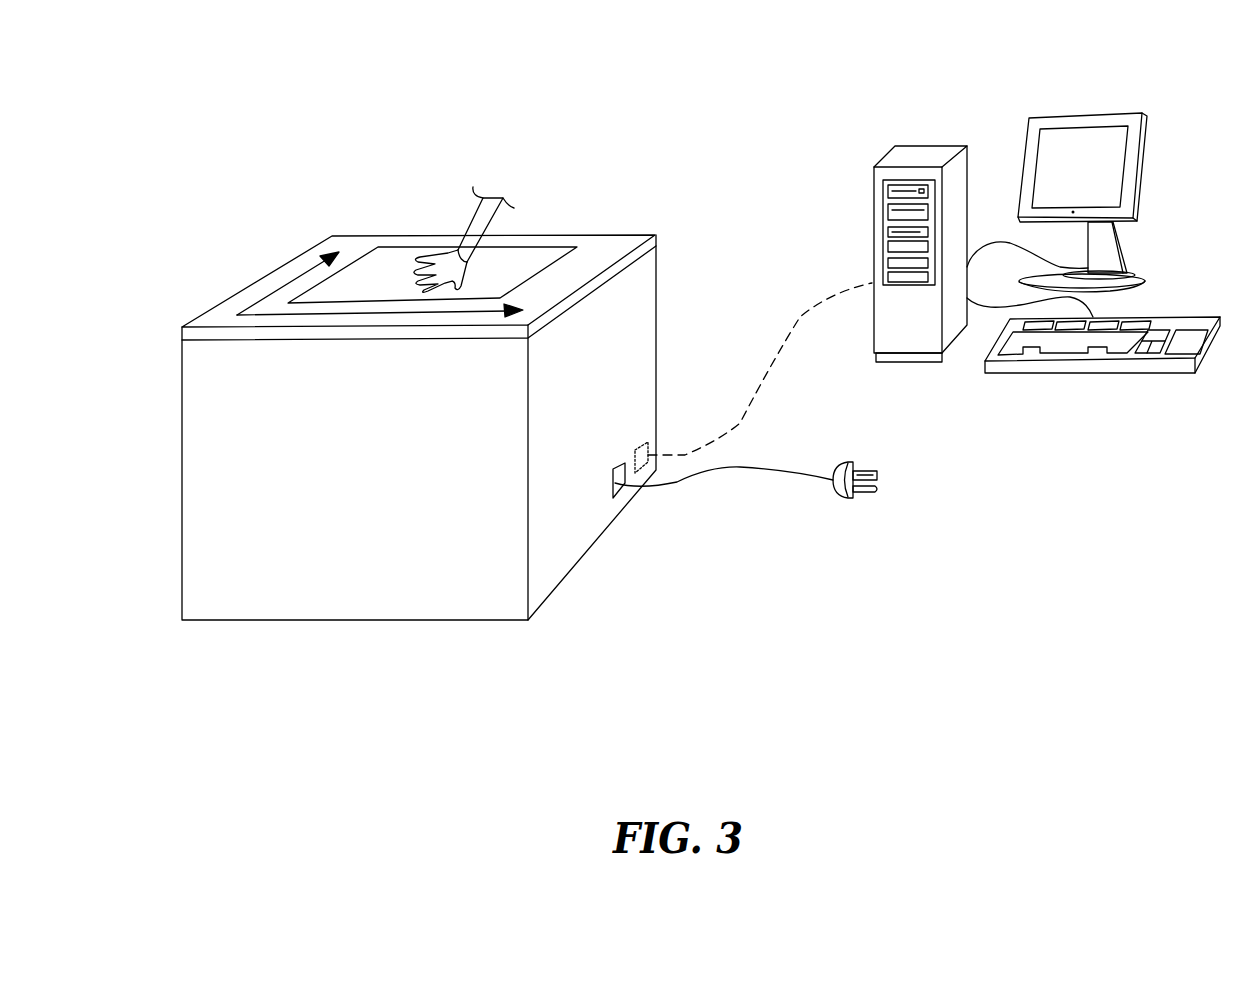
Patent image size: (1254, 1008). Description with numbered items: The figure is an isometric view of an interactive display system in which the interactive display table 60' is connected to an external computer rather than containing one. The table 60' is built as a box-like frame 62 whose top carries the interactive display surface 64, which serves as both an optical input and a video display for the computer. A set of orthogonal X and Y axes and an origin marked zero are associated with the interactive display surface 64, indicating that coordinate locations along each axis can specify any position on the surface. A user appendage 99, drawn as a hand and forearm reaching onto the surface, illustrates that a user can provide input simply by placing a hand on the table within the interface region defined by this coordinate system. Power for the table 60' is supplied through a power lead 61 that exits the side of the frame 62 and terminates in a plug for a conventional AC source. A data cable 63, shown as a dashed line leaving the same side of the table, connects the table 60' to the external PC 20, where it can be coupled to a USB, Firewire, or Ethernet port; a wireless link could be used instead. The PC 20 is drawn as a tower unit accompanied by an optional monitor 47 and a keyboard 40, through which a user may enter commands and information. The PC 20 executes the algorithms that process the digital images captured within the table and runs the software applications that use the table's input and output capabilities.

The interactive display table 60' is at (374, 364).
The frame 62 is at (182, 437).
The interactive display surface 64 is at (312, 260).
The user appendage 99 is at (483, 207).
The power lead 61 is at (762, 468).
The data cable 63 is at (773, 363).
The PC 20 is at (932, 146).
The monitor 47 is at (1142, 163).
The keyboard 40 is at (1187, 317).